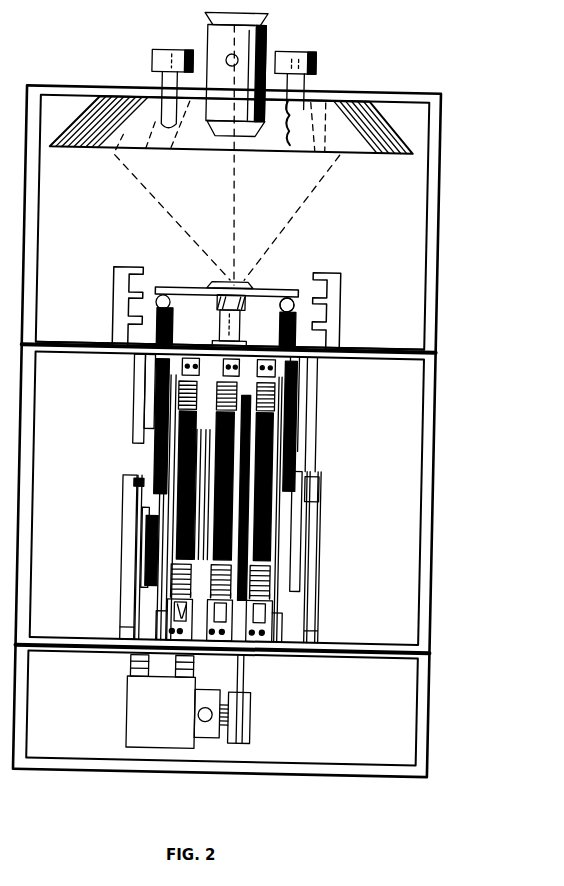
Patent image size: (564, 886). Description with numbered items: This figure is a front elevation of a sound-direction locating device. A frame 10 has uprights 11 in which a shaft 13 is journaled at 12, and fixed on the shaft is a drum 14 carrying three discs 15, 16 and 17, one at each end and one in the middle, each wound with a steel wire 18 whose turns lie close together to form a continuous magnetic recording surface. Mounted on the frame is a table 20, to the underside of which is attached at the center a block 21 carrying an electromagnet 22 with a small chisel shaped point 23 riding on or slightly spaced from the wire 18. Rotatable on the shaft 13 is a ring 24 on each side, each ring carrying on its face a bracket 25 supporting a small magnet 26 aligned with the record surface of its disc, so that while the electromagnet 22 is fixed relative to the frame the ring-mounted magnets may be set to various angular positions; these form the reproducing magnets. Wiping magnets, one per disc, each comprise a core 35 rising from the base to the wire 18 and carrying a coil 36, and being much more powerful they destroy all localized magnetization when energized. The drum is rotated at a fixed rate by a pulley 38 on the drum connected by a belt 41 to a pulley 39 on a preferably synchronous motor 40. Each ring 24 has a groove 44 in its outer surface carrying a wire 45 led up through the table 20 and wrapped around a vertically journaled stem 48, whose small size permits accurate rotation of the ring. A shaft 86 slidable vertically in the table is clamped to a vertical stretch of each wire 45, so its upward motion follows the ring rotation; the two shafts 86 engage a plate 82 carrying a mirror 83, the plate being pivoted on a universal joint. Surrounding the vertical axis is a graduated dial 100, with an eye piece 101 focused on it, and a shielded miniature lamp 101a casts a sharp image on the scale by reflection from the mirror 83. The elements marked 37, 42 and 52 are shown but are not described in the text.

The frame 10 is at (340, 653).
The uprights 11 is at (128, 532).
The journal 12 is at (123, 485).
The shaft 13 is at (305, 480).
The drum 14 is at (196, 500).
The disc 15 is at (216, 426).
The disc 16 is at (220, 538).
The disc 17 is at (304, 418).
The steel wire 18 is at (318, 434).
The table 20 is at (360, 351).
The block 21 is at (245, 348).
The electromagnet 22 is at (226, 384).
The chisel shaped point 23 is at (228, 398).
The ring 24 is at (298, 458).
The bracket 25 is at (144, 374).
The magnet 26 is at (174, 399).
The core 35 is at (285, 575).
The coil 36 is at (285, 582).
The slide 37 is at (177, 561).
The pulley 38 is at (300, 505).
The pulley 39 is at (250, 712).
The motor 40 is at (133, 714).
The belt 41 is at (249, 678).
The roller 42 is at (292, 302).
The groove 44 is at (150, 460).
The wire 45 is at (153, 446).
The stem 48 is at (145, 62).
The clamp 52 is at (181, 488).
The plate 82 is at (260, 289).
The mirror 83 is at (222, 283).
The shaft 86 is at (155, 320).
The dial 100 is at (399, 147).
The eye piece 101 is at (258, 46).
The miniature lamp 101a is at (220, 58).